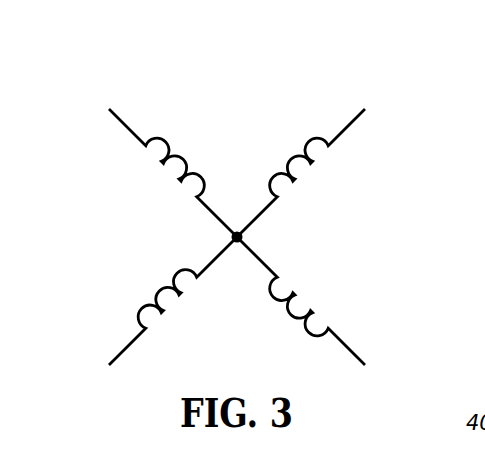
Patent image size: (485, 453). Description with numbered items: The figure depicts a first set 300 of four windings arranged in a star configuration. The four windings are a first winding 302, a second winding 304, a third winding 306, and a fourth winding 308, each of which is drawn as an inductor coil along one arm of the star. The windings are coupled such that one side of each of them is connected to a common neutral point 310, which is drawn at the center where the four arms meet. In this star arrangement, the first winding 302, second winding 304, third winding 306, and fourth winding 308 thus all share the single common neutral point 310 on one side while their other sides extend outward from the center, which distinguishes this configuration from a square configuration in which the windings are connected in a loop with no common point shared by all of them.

The first set of four windings 300 is at (337, 91).
The first winding 302 is at (179, 153).
The second winding 304 is at (154, 294).
The third winding 306 is at (316, 181).
The fourth winding 308 is at (284, 309).
The common neutral point 310 is at (242, 237).